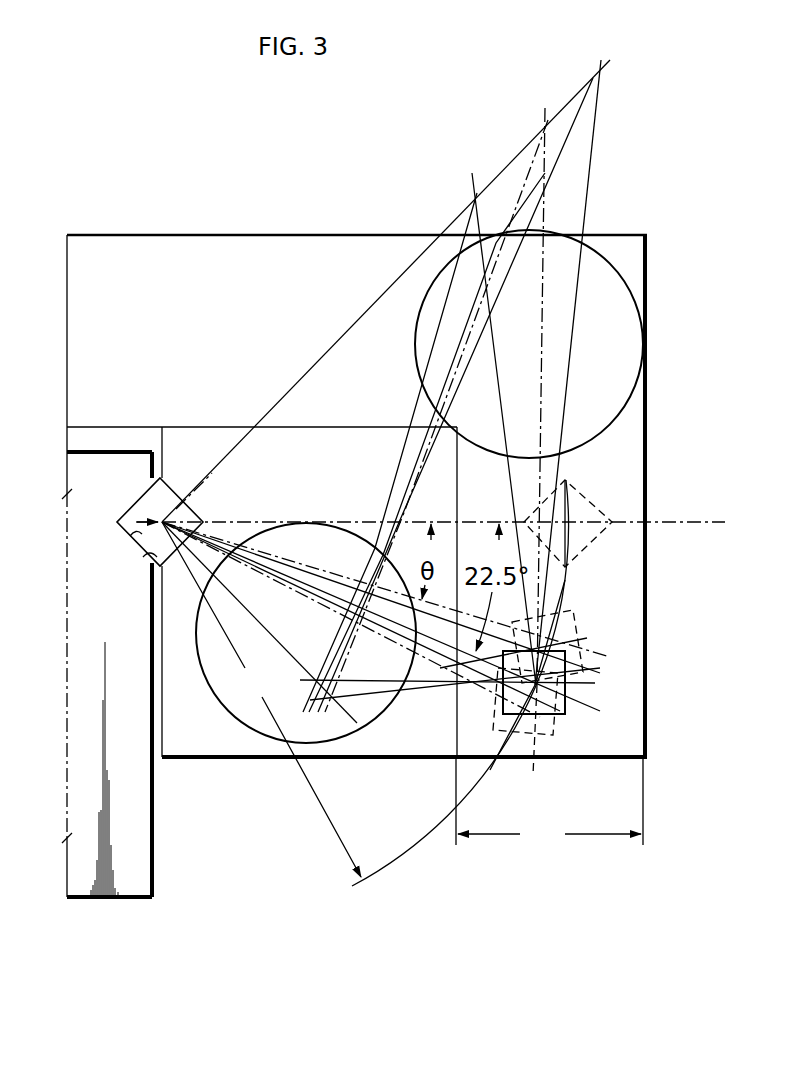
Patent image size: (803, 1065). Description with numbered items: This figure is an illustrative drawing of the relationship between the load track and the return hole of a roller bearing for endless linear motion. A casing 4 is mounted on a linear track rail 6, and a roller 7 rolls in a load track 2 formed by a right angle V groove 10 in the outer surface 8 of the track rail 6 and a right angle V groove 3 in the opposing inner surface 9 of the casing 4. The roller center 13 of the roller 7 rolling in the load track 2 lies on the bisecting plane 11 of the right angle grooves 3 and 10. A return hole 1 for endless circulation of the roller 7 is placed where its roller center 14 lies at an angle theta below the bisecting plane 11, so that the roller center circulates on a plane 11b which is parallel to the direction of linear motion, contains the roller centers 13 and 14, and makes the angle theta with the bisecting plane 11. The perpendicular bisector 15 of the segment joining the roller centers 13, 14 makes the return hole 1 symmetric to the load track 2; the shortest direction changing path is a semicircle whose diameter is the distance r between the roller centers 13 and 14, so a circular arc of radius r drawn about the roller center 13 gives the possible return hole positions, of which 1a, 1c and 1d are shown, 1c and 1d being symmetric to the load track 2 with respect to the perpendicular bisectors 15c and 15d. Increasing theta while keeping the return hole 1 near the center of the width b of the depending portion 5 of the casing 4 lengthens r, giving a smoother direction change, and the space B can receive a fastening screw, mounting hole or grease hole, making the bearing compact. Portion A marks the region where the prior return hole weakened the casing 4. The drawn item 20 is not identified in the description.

The return hole 1 is at (583, 647).
The return hole position 1a is at (592, 500).
The return hole position 1c is at (567, 677).
The return hole position 1d is at (542, 456).
The load track 2 is at (168, 493).
The right angle V groove 3 is at (150, 558).
The casing 4 is at (322, 248).
The depending portion 5 is at (637, 588).
The track rail 6 is at (130, 876).
The roller 7 is at (196, 519).
The outer surface 8 is at (154, 828).
The inner surface 9 is at (162, 757).
The right angle V groove 10 is at (135, 534).
The bisecting plane 11 is at (692, 520).
The plane 11b is at (314, 568).
The roller center 13 is at (192, 497).
The roller center 14 is at (550, 643).
The perpendicular bisector 15 is at (408, 418).
The perpendicular bisector 15c is at (457, 343).
The perpendicular bisector 15d is at (462, 375).
The housing bottom wall 20 is at (389, 750).
The A portion A is at (603, 265).
The space B is at (221, 707).
The distance r is at (365, 683).
The width b is at (549, 803).